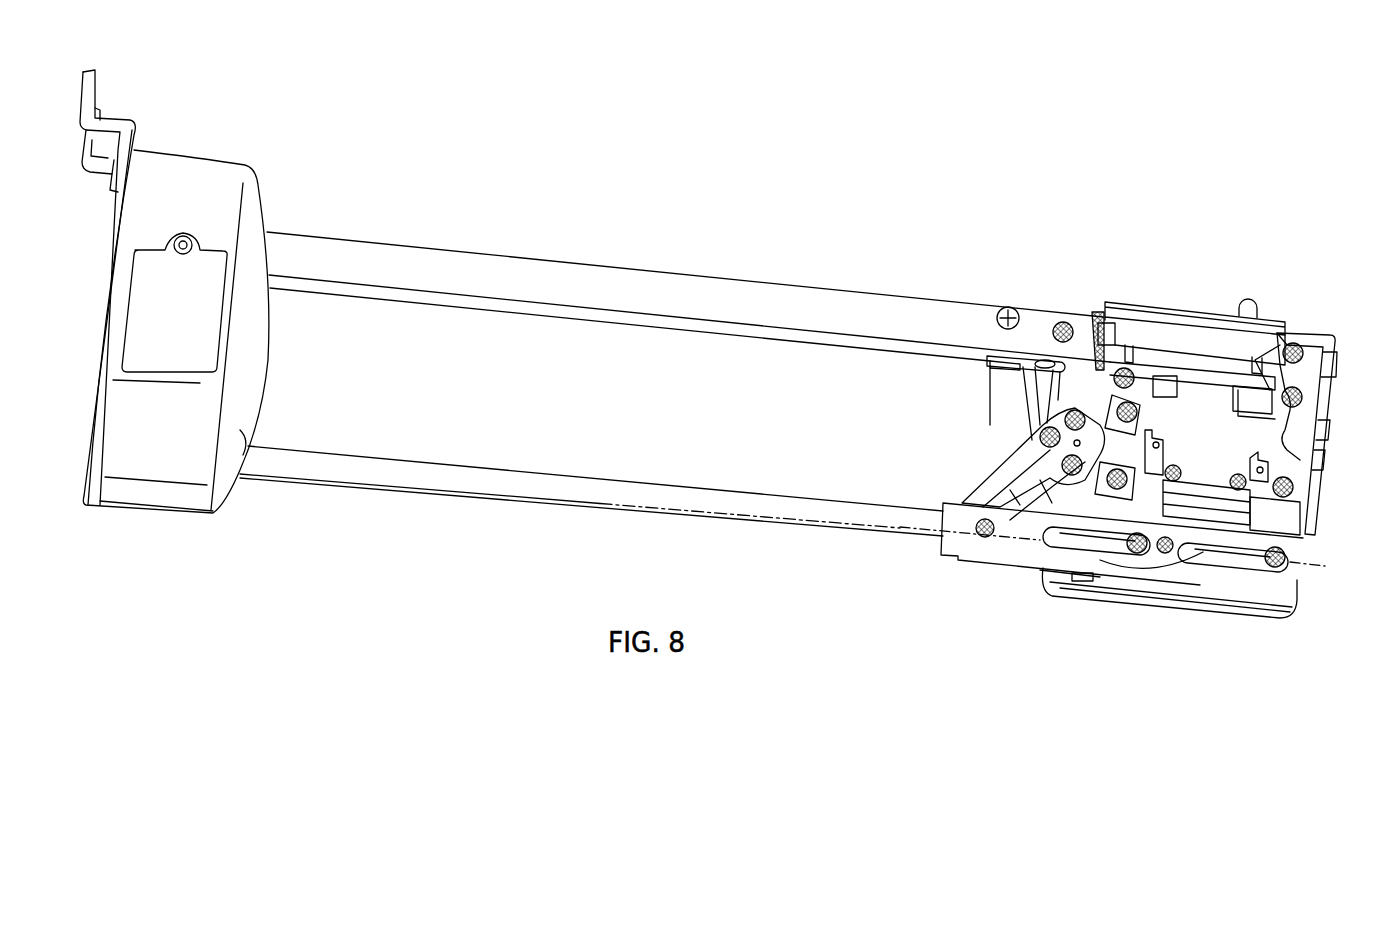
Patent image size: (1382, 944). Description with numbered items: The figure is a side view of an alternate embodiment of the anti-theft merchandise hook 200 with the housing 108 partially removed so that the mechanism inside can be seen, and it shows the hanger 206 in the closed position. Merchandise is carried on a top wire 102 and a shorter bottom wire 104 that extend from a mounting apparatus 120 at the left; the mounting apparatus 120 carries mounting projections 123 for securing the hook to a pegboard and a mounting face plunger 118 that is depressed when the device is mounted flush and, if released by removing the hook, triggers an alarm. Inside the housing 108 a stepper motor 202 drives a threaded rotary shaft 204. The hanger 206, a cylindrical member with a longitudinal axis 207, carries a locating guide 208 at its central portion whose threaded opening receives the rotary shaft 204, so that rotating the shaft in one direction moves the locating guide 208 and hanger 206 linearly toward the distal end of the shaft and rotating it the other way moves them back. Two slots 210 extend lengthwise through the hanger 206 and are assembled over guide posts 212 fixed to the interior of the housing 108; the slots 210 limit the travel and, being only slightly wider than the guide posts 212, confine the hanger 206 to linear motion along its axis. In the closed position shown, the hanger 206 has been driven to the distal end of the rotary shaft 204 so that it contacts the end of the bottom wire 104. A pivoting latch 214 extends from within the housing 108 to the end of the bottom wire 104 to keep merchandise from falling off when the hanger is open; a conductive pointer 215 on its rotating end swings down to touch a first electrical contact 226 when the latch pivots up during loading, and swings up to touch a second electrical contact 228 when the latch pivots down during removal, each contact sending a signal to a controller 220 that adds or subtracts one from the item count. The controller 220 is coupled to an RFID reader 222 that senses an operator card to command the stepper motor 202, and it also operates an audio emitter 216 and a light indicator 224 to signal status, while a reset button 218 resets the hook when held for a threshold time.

The top wire 102 is at (520, 255).
The bottom wire 104 is at (500, 506).
The housing 108 is at (1215, 606).
The mounting face plunger 118 is at (120, 196).
The mounting apparatus 120 is at (165, 515).
The mounting projections 123 is at (95, 76).
The anti-theft merchandise hook 200 is at (976, 180).
The stepper motor 202 is at (1300, 497).
The rotary shaft 204 is at (1210, 490).
The hanger 206 is at (1005, 560).
The longitudinal axis 207 is at (938, 528).
The locating guide 208 is at (1165, 476).
The slots 210 is at (1203, 552).
The guide posts 212 is at (1135, 533).
The pivoting latch 214 is at (995, 467).
The conductive pointer 215 is at (1070, 396).
The audio emitter 216 is at (1177, 302).
The reset button 218 is at (1258, 301).
The controller 220 is at (1312, 428).
The RFID reader 222 is at (1160, 408).
The light indicator 224 is at (1196, 292).
The first electrical contact 226 is at (1060, 470).
The second electrical contact 228 is at (1100, 410).